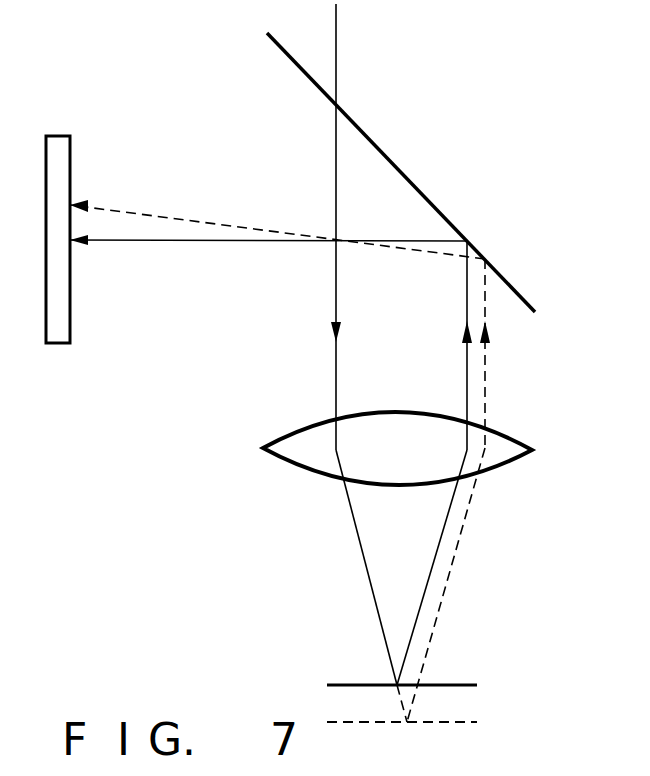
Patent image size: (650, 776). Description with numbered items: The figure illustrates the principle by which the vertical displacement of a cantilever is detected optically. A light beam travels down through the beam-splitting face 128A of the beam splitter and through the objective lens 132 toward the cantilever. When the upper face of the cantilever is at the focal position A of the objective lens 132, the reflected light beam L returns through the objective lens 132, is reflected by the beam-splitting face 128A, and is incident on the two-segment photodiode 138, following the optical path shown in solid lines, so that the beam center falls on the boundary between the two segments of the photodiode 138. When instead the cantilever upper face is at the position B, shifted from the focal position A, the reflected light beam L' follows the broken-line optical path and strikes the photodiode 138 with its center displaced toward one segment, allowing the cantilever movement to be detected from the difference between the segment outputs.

The two-segment photodiode 138 is at (60, 135).
The beam-splitting face 128A is at (378, 146).
The objective lens 132 is at (516, 439).
The light beam L is at (401, 567).
The light beam L' is at (461, 585).
The focal position A is at (414, 687).
The position B is at (414, 723).